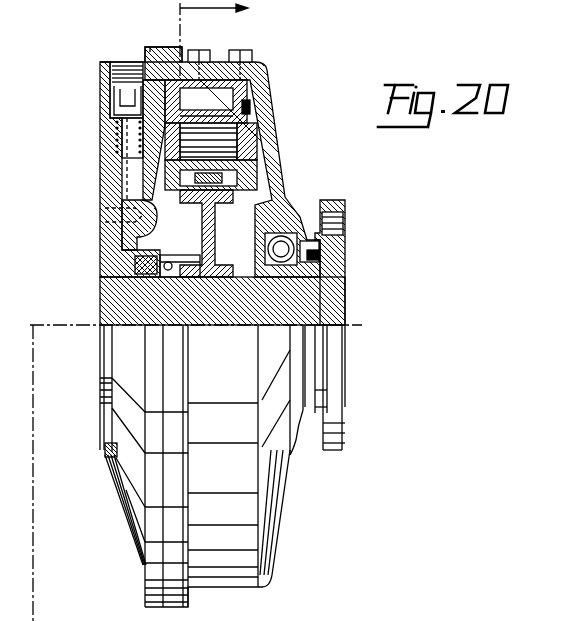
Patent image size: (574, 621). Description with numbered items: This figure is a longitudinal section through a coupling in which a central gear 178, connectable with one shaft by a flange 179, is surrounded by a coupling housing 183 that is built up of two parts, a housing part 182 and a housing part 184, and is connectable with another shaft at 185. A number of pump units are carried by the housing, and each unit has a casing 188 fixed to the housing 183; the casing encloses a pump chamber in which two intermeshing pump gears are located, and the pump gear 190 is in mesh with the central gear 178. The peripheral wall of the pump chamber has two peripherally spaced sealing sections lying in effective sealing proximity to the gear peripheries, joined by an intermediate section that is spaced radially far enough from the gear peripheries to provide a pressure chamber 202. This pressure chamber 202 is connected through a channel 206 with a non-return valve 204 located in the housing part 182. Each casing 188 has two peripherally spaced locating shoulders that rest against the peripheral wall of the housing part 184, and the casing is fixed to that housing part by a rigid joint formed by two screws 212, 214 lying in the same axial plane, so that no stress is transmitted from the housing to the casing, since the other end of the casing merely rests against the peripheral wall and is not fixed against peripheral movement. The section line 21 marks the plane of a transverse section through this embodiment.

The section line 21 is at (172, 310).
The central gear 178 is at (212, 229).
The flange 179 is at (330, 239).
The housing part 182 is at (122, 160).
The coupling housing 183 is at (235, 373).
The housing part 184 is at (262, 123).
The shaft connection of housing 185 is at (110, 233).
The casing 188 is at (250, 125).
The pump gear 190 is at (251, 102).
The pressure chamber 202 is at (212, 93).
The non-return valve 204 is at (110, 101).
The channel 206 is at (163, 80).
The screw 212 is at (257, 58).
The screw 214 is at (198, 54).